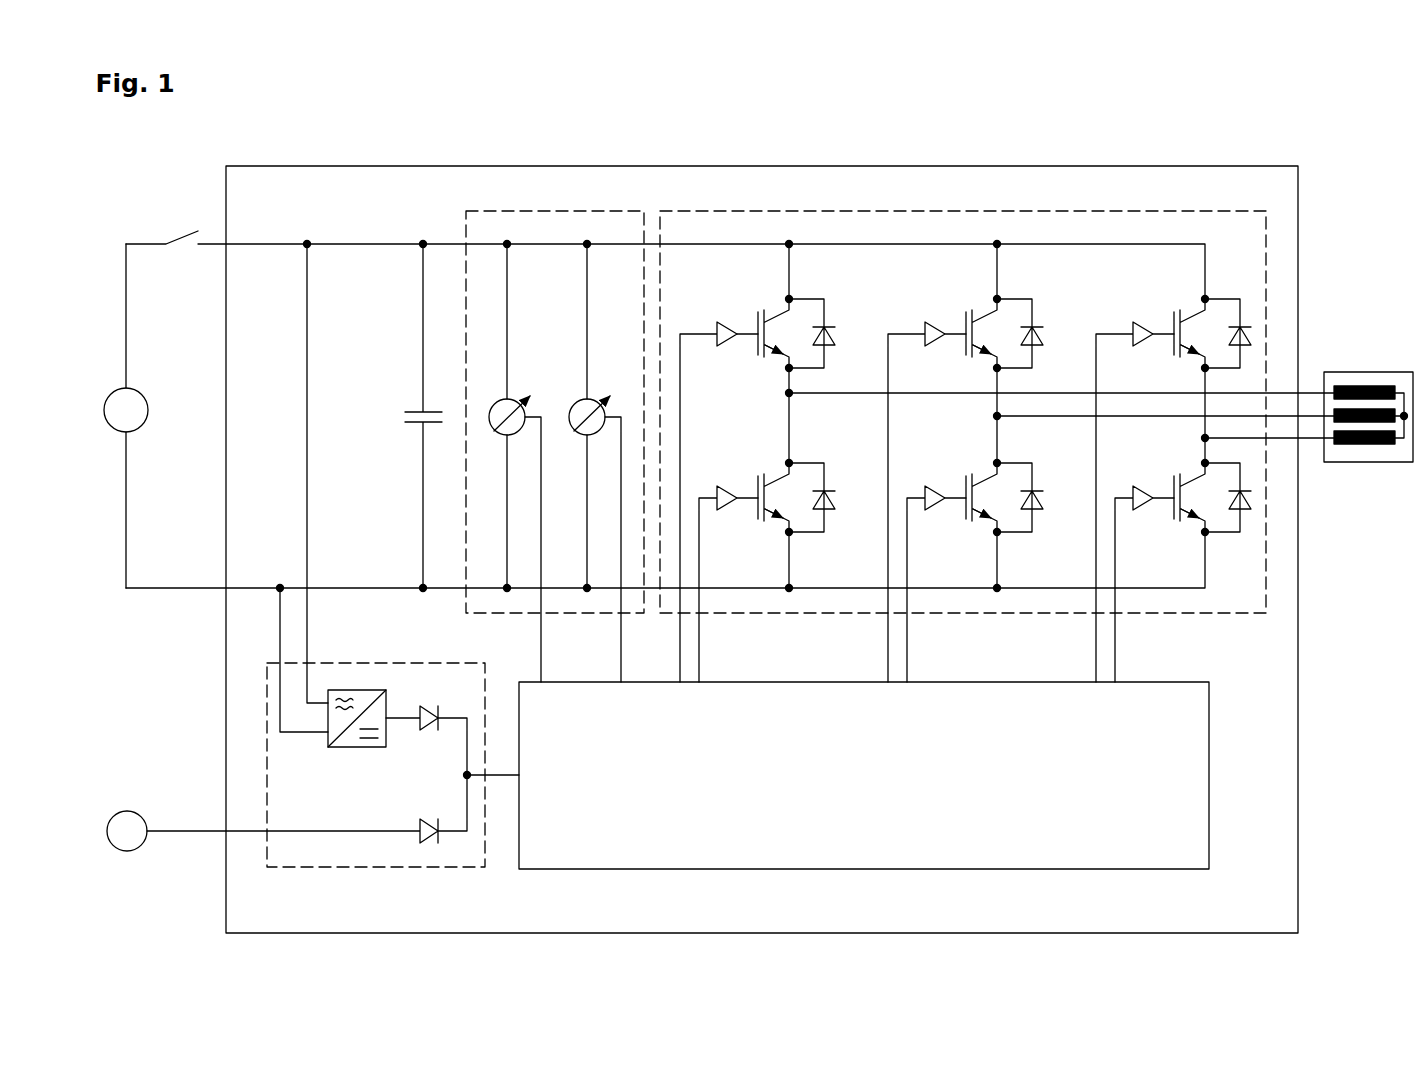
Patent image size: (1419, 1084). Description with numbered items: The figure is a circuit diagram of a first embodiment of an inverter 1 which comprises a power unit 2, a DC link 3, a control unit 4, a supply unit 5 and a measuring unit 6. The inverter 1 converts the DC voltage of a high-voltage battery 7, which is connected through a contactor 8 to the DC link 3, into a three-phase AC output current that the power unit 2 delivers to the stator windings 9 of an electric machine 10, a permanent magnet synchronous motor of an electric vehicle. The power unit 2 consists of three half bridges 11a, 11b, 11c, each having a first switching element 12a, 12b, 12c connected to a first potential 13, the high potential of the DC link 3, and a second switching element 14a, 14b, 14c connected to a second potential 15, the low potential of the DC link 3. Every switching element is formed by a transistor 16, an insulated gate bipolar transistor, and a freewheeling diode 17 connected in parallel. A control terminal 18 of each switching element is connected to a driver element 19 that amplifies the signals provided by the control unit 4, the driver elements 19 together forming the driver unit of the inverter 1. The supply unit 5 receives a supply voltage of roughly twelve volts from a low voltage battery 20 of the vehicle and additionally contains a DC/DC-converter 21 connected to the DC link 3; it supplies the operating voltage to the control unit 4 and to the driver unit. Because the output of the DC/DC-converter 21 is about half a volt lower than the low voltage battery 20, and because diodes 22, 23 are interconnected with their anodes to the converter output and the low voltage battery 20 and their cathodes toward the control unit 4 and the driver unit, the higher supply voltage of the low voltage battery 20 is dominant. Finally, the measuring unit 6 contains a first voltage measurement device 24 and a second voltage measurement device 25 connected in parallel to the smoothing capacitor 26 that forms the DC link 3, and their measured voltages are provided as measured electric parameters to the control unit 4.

The inverter 1 is at (370, 166).
The power unit 2 is at (1148, 212).
The DC link 3 is at (393, 416).
The control unit 4 is at (1209, 764).
The supply unit 5 is at (333, 606).
The measuring unit 6 is at (555, 381).
The high-voltage battery 7 is at (127, 388).
The contactor 8 is at (180, 232).
The stator windings 9 is at (1360, 387).
The electric machine 10 is at (1369, 373).
The half bridge 11a is at (997, 381).
The half bridge 11b is at (1111, 381).
The half bridge 11c is at (1215, 381).
The first switching element 12a is at (797, 381).
The first switching element 12b is at (1014, 288).
The first switching element 12c is at (1223, 288).
The first potential 13 is at (265, 245).
The second switching element 14a is at (814, 552).
The second switching element 14b is at (1022, 552).
The second switching element 14c is at (1230, 552).
The second potential 15 is at (279, 587).
The transistor 16 is at (781, 319).
The freewheeling diode 17 is at (838, 328).
The control terminal 18 is at (757, 333).
The driver element 19 is at (717, 332).
The low voltage battery 20 is at (127, 852).
The DC/DC-converter 21 is at (351, 748).
The diode 22 is at (426, 730).
The diode 23 is at (437, 844).
The first voltage measurement device 24 is at (526, 398).
The second voltage measurement device 25 is at (606, 398).
The smoothing capacitor 26 is at (416, 410).